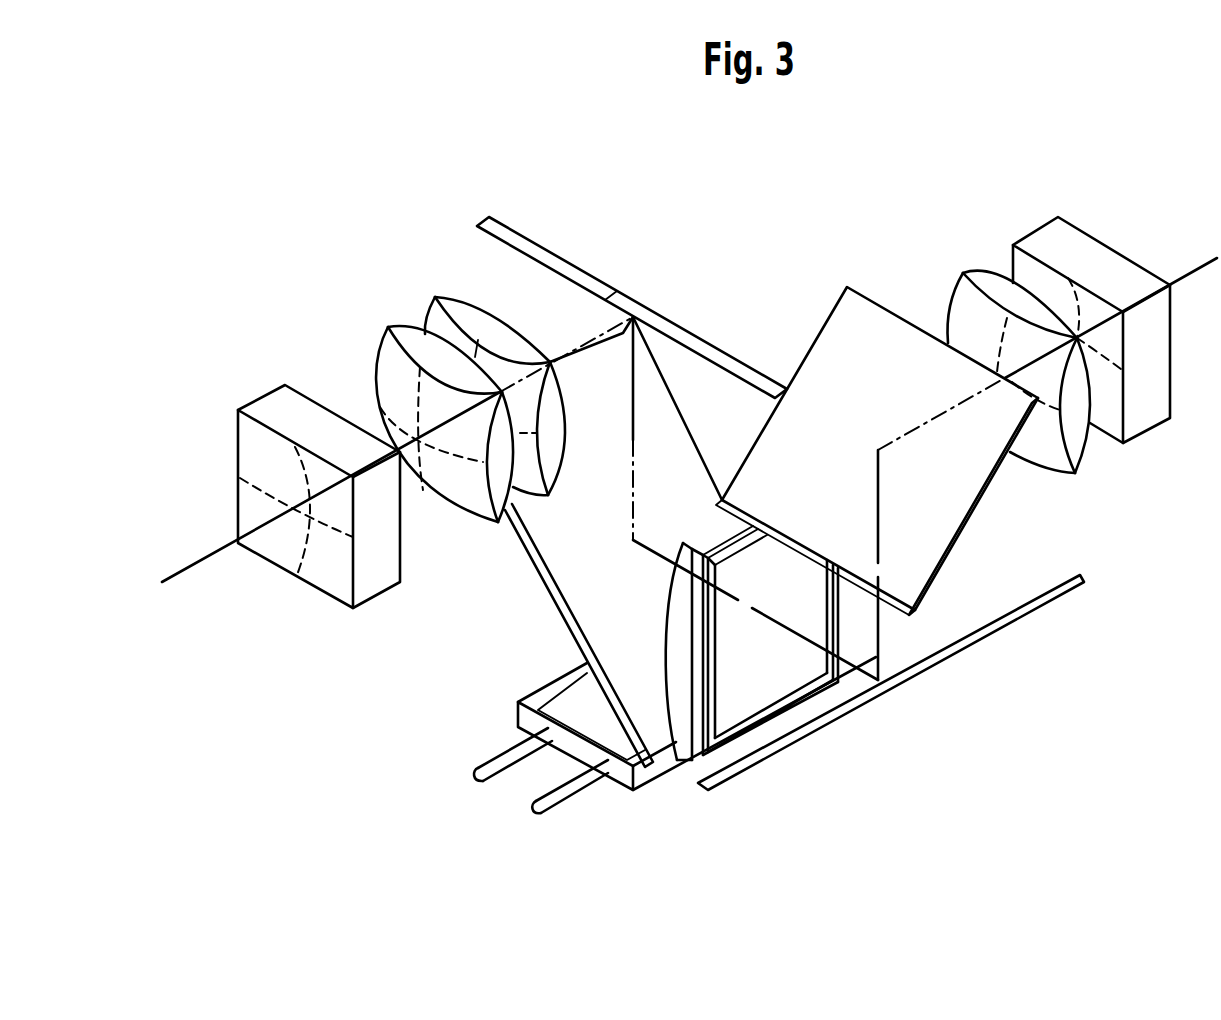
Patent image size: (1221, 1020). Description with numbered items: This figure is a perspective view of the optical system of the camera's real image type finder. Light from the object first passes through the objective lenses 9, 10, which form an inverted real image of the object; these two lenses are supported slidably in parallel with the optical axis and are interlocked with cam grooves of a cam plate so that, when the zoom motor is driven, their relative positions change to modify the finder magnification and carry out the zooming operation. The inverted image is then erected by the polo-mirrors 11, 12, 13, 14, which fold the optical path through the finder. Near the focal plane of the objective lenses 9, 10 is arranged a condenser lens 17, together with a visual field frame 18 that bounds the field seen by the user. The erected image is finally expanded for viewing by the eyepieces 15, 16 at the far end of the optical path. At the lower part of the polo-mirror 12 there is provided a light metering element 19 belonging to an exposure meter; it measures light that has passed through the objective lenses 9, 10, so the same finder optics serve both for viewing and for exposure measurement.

The objective lens 9 is at (277, 407).
The objective lens 10 is at (355, 346).
The polo-mirror 11 is at (548, 258).
The polo-mirror 12 is at (555, 556).
The polo-mirror 13 is at (780, 743).
The polo-mirror 14 is at (837, 319).
The eyepiece 15 is at (968, 297).
The eyepiece 16 is at (1087, 268).
The condenser lens 17 is at (676, 762).
The visual field frame 18 is at (713, 728).
The light metering element 19 is at (515, 722).